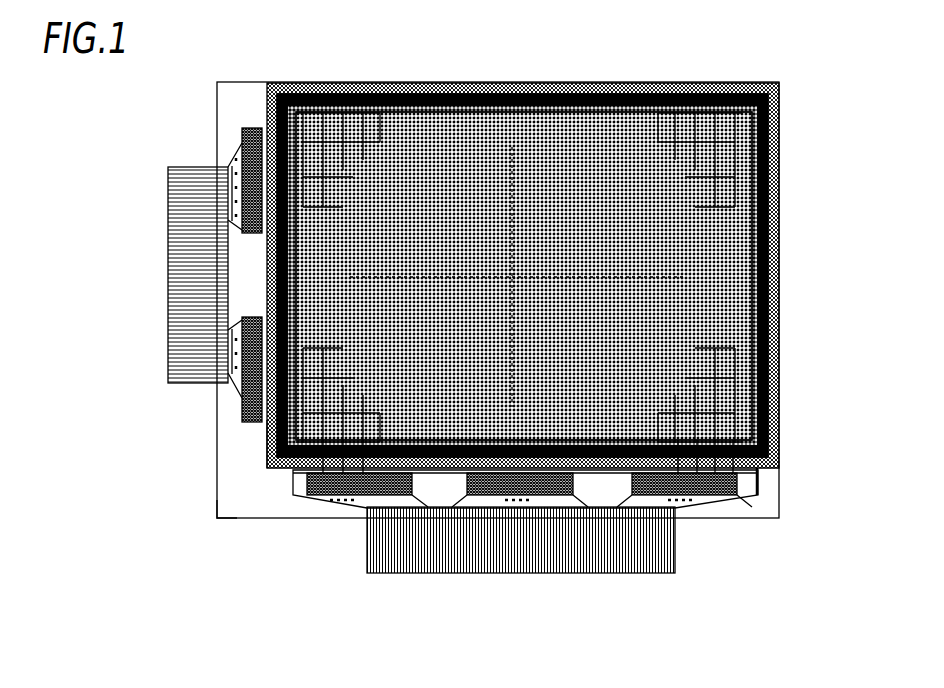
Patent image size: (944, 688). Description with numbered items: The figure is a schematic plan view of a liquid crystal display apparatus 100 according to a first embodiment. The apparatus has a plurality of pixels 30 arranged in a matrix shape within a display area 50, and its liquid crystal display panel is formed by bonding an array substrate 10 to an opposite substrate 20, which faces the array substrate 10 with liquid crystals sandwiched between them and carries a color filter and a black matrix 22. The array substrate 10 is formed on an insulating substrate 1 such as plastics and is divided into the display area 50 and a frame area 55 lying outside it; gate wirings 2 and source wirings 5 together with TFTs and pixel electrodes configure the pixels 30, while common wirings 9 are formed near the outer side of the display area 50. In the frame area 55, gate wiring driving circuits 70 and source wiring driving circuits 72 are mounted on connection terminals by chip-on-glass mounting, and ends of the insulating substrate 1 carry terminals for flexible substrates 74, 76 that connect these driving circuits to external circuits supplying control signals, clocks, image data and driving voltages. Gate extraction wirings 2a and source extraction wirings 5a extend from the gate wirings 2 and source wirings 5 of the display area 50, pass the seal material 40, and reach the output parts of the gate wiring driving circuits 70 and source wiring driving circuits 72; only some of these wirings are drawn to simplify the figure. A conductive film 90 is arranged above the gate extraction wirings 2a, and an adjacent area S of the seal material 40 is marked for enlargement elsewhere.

The liquid crystal display apparatus 100 is at (165, 681).
The array substrate 10 is at (217, 518).
The insulating substrate 1 is at (561, 236).
The gate wirings 2 is at (335, 83).
The gate extraction wirings 2a is at (293, 83).
The pixels 30 is at (406, 83).
The display area 50 is at (560, 142).
The seal material 40 is at (780, 228).
The black matrix 22 is at (780, 290).
The source wirings 5 is at (735, 392).
The source extraction wirings 5a is at (757, 446).
The gate wiring driving circuits 70 is at (247, 167).
The flexible substrate 74 is at (192, 283).
The adjacent area of the seal material S is at (243, 378).
The conductive film 90 is at (267, 442).
The frame area 55 is at (237, 492).
The opposite substrate 20 is at (772, 472).
The source wiring driving circuits 72 is at (710, 490).
The common wirings 9 is at (347, 503).
The flexible substrate 76 is at (530, 540).